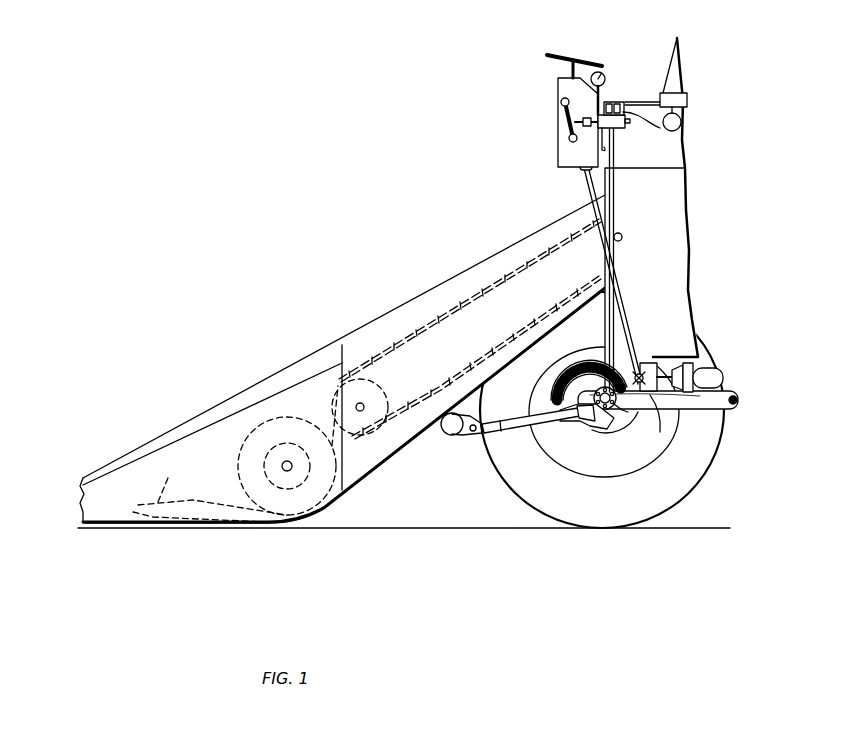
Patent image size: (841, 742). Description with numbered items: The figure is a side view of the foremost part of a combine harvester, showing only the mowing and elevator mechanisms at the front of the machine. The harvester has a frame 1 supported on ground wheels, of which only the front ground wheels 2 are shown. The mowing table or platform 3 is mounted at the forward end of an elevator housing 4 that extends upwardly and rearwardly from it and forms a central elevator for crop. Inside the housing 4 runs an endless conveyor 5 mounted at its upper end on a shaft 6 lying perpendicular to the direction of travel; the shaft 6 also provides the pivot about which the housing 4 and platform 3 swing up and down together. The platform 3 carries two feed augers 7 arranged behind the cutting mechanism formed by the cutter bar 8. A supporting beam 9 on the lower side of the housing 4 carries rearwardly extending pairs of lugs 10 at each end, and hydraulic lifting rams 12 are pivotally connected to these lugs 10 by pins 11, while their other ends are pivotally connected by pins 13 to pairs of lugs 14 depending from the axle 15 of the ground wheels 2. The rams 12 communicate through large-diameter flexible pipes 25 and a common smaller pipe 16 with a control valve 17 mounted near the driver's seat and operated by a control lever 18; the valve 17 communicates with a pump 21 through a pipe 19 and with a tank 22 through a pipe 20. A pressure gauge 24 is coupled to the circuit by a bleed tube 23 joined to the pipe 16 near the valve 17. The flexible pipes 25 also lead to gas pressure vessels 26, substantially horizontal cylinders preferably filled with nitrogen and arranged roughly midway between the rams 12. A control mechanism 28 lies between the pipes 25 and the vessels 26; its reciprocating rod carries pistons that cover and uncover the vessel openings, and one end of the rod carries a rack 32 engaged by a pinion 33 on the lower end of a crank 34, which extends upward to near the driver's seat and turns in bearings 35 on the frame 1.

The frame 1 is at (719, 402).
The ground wheels 2 is at (532, 492).
The mowing table or platform 3 is at (263, 524).
The elevator housing 4 is at (380, 323).
The endless conveyor 5 is at (410, 343).
The shaft 6 is at (623, 237).
The feed augers 7 is at (262, 467).
The cutter bar 8 is at (160, 498).
The supporting beam 9 is at (445, 431).
The lugs 10 is at (466, 437).
The pins 11 is at (478, 424).
The hydraulic lifting cylinders or rams 12 is at (528, 431).
The pins 13 is at (585, 421).
The lugs 14 is at (589, 421).
The axle 15 is at (607, 421).
The common pipe 16 is at (618, 184).
The control valve 17 is at (626, 129).
The control lever 18 is at (559, 124).
The pipe 19 is at (656, 134).
The pipe 20 is at (640, 99).
The pump 21 is at (686, 126).
The tank 22 is at (662, 90).
The bleed tube 23 is at (610, 149).
The pressure gauge 24 is at (601, 69).
The flexible pipes 25 is at (548, 396).
The gas pressure vessels 26 is at (700, 406).
The control mechanism 28 is at (646, 419).
The rack 32 is at (661, 366).
The pinion 33 is at (626, 411).
The crank 34 is at (632, 303).
The bearings 35 is at (580, 172).